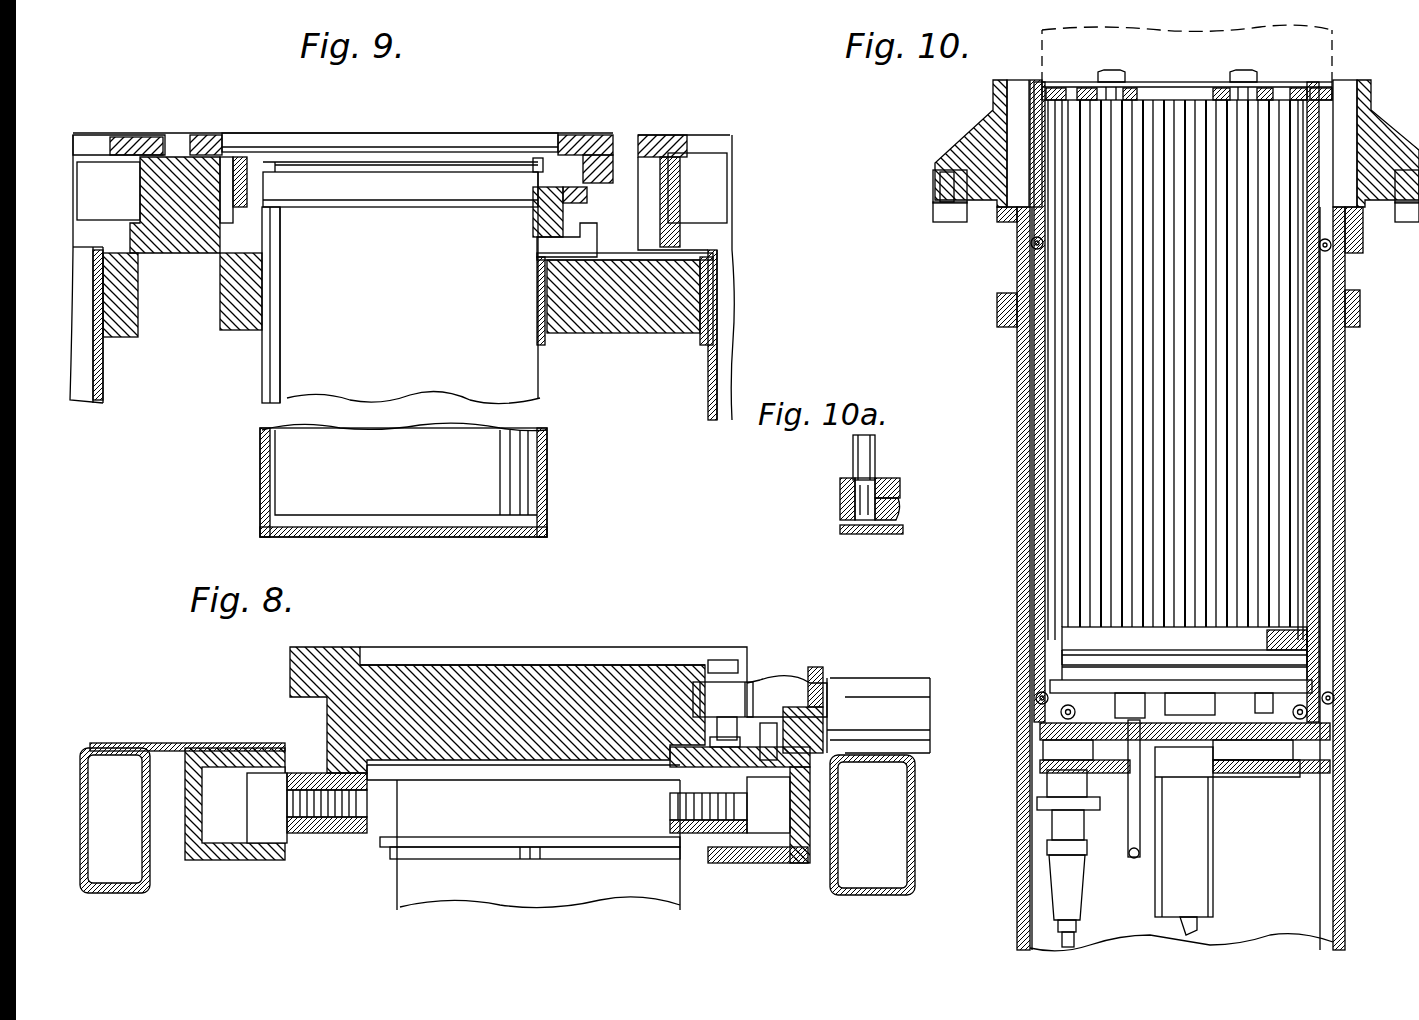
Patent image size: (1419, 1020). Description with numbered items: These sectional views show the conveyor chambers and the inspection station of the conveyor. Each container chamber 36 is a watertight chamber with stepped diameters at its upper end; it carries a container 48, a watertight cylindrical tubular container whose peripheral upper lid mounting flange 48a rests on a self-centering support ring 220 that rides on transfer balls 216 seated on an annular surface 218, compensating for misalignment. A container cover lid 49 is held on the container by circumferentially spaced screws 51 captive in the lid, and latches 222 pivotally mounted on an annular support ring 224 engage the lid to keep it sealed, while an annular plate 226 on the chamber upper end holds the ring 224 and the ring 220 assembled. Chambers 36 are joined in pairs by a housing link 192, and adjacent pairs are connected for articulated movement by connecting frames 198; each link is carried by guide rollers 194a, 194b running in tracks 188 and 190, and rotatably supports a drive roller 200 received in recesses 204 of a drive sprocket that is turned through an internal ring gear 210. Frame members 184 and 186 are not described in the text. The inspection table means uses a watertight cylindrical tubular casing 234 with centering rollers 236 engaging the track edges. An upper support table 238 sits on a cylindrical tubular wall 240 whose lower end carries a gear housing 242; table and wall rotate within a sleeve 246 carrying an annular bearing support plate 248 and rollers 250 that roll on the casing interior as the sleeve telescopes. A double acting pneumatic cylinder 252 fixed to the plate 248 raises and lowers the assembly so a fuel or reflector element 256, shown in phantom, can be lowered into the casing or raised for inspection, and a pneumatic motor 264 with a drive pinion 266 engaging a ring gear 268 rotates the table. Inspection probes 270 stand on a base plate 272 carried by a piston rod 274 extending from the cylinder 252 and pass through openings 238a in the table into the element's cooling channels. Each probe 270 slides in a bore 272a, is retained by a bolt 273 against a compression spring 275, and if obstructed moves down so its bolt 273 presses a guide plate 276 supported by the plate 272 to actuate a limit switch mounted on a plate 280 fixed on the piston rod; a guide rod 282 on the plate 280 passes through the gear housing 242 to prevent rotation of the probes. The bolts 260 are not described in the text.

In FIG. 9, the container chamber 36 is at (547, 478).
In FIG. 8, the container chamber 36 is at (397, 905).
In FIG. 9, the container 48 is at (540, 392).
In FIG. 9, the upper lid mounting flange 48a is at (340, 200).
In FIG. 9, the container cover lid 49 is at (478, 118).
In FIG. 9, the screw 51 is at (540, 158).
In FIG. 8, the frame member 184 is at (850, 890).
In FIG. 8, the frame member 186 is at (134, 890).
In FIG. 8, the track 188 is at (730, 865).
In FIG. 8, the track 190 is at (210, 860).
In FIG. 9, the housing link 192 is at (215, 250).
In FIG. 8, the housing link 192 is at (330, 695).
In FIG. 8, the guide roller 194a is at (778, 830).
In FIG. 8, the guide roller 194b is at (272, 840).
In FIG. 9, the connecting frame 198 is at (630, 315).
In FIG. 8, the drive roller 200 is at (735, 685).
In FIG. 8, the recess 204 is at (795, 690).
In FIG. 8, the internal ring gear 210 is at (860, 700).
In FIG. 9, the transfer ball 216 is at (150, 236).
In FIG. 9, the annular surface 218 is at (580, 245).
In FIG. 9, the self-centering support ring 220 is at (580, 200).
In FIG. 9, the latch 222 is at (250, 160).
In FIG. 9, the annular support ring 224 is at (240, 155).
In FIG. 9, the annular plate 226 is at (590, 155).
In FIG. 10, the cylindrical tubular casing 234 is at (1320, 433).
In FIG. 10, the roller 236 is at (937, 205).
In FIG. 10, the support table 238 is at (1175, 82).
In FIG. 10, the opening 238a is at (1065, 82).
In FIG. 10, the cylindrical tubular wall 240 is at (1310, 578).
In FIG. 10, the gear housing 242 is at (1332, 730).
In FIG. 10, the sleeve 246 is at (1318, 600).
In FIG. 10, the annular bearing support plate 248 is at (1318, 777).
In FIG. 10, the roller 250 is at (1028, 248).
In FIG. 10, the double acting pneumatic cylinder 252 is at (1213, 862).
In FIG. 10, the fuel or reflector element 256 is at (1335, 80).
In FIG. 10, the bolt 260 is at (1112, 70).
In FIG. 10, the pneumatic motor 264 is at (1060, 875).
In FIG. 10, the drive pinion 266 is at (1040, 745).
In FIG. 10, the ring gear 268 is at (1037, 803).
In FIG. 10, the inspection probe 270 is at (1130, 432).
In FIG. 10A, the inspection probe 270 is at (853, 440).
In FIG. 10, the base plate 272 is at (1062, 632).
In FIG. 10A, the base plate 272 is at (900, 508).
In FIG. 10A, the bore 272a is at (900, 483).
In FIG. 10A, the bolt 273 is at (845, 515).
In FIG. 10, the piston rod 274 is at (1213, 773).
In FIG. 10A, the compression spring 275 is at (840, 495).
In FIG. 10, the guide plate 276 is at (1062, 645).
In FIG. 10A, the guide plate 276 is at (895, 534).
In FIG. 10, the plate 280 is at (1050, 684).
In FIG. 10, the guide rod 282 is at (1130, 855).